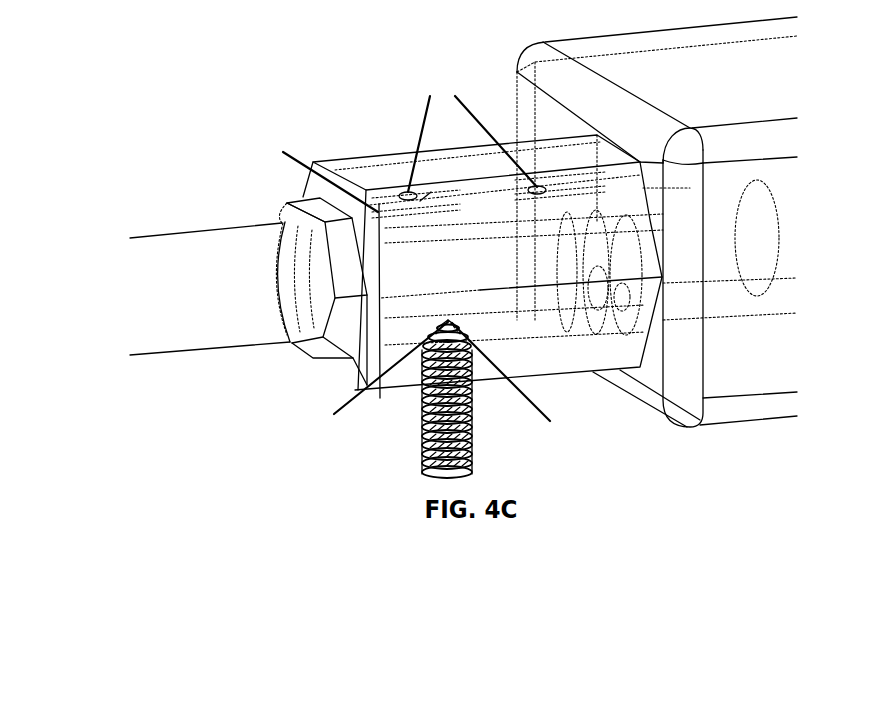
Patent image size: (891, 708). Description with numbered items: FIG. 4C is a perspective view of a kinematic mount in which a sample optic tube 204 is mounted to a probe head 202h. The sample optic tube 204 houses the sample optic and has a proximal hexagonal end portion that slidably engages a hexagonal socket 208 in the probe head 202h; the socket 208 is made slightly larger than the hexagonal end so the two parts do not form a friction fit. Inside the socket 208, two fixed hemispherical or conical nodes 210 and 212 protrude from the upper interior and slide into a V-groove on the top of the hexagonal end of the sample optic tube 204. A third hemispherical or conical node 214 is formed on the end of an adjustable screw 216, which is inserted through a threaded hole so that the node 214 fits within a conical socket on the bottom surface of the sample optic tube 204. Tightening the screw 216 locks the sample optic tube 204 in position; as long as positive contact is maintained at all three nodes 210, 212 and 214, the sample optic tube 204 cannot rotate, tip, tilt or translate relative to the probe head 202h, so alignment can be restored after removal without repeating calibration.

The probe head 202h is at (652, 33).
The sample optic tube 204 is at (178, 235).
The hexagonal socket 208 is at (407, 150).
The hemispherical or conical node 210 is at (398, 208).
The hemispherical or conical node 212 is at (555, 190).
The hemispherical or conical node 214 is at (446, 322).
The adjustable screw 216 is at (463, 427).